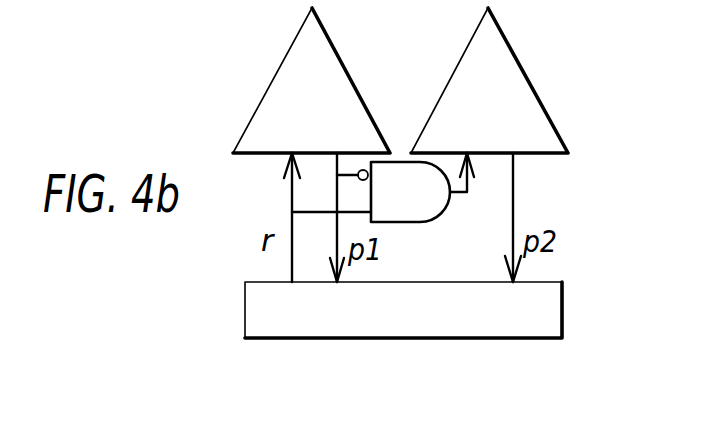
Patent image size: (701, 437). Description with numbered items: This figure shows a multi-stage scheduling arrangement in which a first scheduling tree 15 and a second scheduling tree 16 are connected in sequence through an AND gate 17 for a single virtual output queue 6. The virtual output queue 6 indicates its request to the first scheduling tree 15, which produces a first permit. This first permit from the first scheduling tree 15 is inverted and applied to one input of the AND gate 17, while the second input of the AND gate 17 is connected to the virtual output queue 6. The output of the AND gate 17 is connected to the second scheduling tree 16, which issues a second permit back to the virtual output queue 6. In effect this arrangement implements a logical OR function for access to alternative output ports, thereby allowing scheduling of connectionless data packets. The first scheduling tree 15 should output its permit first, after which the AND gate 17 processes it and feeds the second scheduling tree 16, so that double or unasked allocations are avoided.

The first scheduling tree 15 is at (290, 90).
The second scheduling tree 16 is at (508, 88).
The AND gate 17 is at (428, 195).
The virtual output queue 6 is at (400, 318).